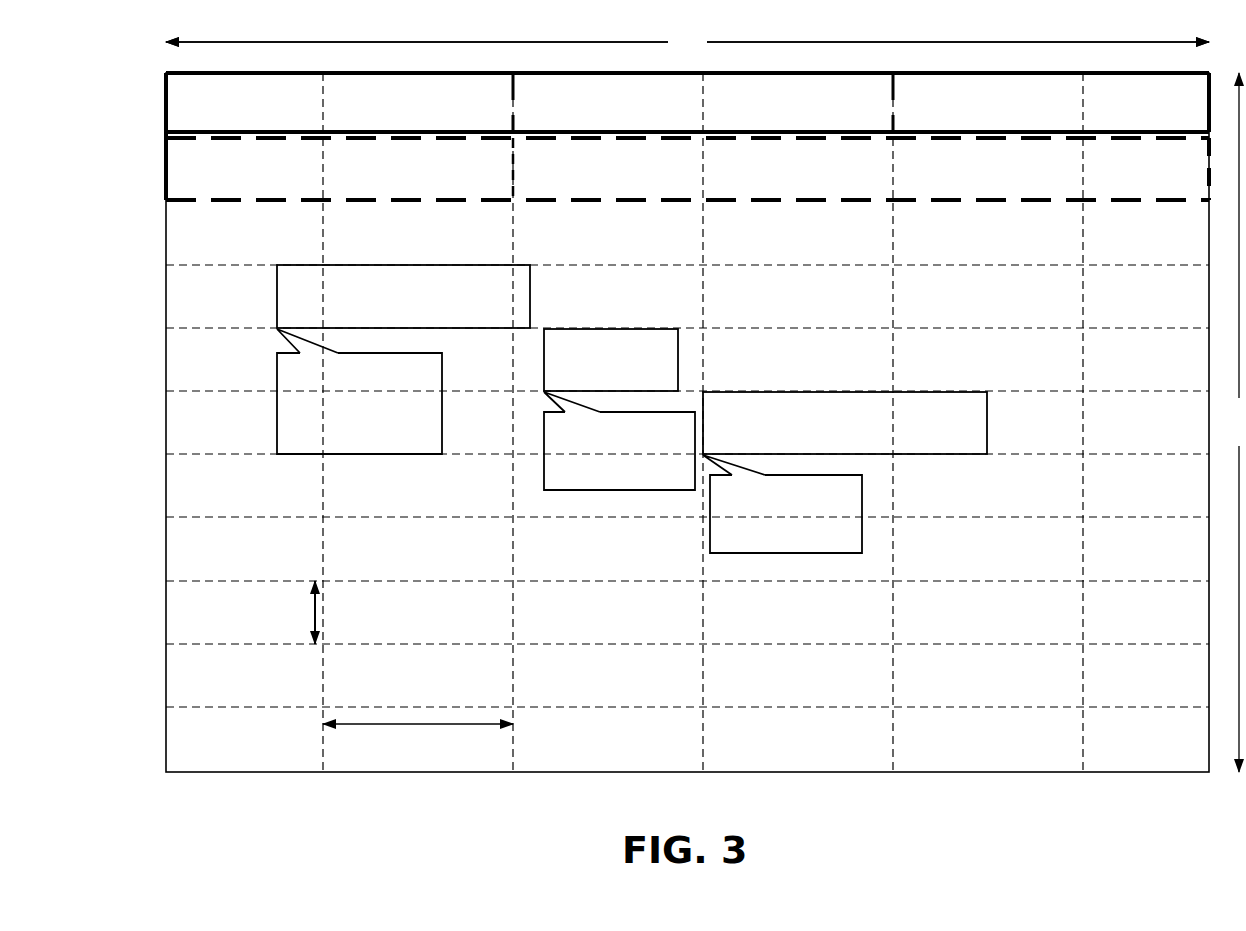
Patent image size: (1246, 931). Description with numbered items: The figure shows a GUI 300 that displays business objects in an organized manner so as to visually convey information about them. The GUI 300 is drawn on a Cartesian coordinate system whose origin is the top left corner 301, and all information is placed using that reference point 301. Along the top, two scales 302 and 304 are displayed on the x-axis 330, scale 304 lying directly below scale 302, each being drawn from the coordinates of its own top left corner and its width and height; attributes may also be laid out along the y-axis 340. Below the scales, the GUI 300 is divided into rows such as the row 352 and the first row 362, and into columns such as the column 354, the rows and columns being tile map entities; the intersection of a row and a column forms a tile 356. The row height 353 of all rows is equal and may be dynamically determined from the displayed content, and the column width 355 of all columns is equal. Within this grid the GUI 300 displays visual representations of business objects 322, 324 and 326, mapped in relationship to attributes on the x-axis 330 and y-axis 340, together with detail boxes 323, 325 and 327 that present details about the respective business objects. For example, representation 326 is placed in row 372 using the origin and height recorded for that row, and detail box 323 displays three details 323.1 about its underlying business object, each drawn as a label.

The GUI 300 is at (687, 487).
The top left corner 301 is at (168, 74).
The scale 302 is at (170, 73).
The scale 304 is at (170, 138).
The first row 362 is at (170, 200).
The row 372 is at (170, 391).
The row 352 is at (170, 581).
The BO visual representation 322 is at (403, 296).
The detail box 323 is at (442, 407).
The details 323.1 is at (347, 362).
The BO visual representation 324 is at (611, 360).
The detail box 325 is at (544, 454).
The BO visual representation 326 is at (845, 423).
The detail box 327 is at (862, 518).
The x-axis 330 is at (687, 41).
The y-axis 340 is at (1242, 422).
The row height 353 is at (302, 612).
The column 354 is at (513, 765).
The column width 355 is at (418, 738).
The tile 356 is at (418, 612).